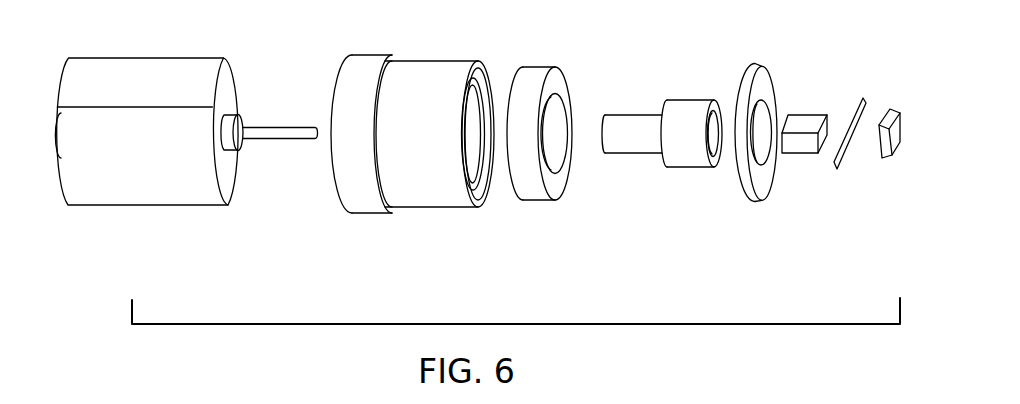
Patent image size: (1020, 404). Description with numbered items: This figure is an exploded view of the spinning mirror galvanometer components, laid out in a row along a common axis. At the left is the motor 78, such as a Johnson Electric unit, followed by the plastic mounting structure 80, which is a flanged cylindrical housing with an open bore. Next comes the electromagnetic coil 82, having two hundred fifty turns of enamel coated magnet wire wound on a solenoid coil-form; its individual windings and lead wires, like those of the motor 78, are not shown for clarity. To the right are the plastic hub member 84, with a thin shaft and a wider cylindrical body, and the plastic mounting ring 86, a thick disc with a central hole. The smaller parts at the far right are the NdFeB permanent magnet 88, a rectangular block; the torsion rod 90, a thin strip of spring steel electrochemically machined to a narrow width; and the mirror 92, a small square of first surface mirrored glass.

The motor 78 is at (145, 180).
The plastic mounting structure 80 is at (425, 183).
The electromagnetic coil 82 is at (530, 183).
The plastic hub member 84 is at (684, 150).
The plastic mounting ring 86 is at (763, 177).
The permanent magnet 88 is at (815, 123).
The torsion rod 90 is at (838, 157).
The mirror 92 is at (887, 150).